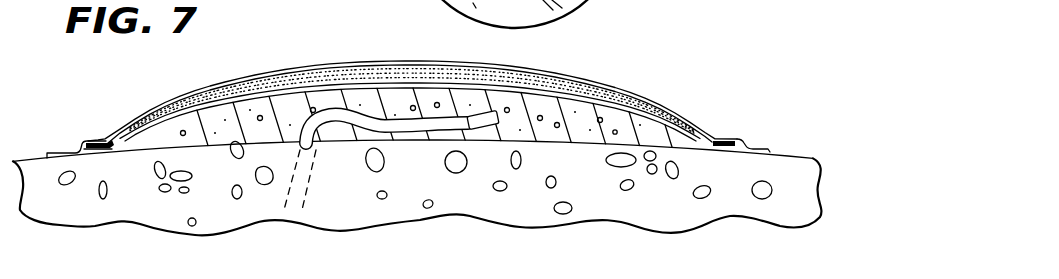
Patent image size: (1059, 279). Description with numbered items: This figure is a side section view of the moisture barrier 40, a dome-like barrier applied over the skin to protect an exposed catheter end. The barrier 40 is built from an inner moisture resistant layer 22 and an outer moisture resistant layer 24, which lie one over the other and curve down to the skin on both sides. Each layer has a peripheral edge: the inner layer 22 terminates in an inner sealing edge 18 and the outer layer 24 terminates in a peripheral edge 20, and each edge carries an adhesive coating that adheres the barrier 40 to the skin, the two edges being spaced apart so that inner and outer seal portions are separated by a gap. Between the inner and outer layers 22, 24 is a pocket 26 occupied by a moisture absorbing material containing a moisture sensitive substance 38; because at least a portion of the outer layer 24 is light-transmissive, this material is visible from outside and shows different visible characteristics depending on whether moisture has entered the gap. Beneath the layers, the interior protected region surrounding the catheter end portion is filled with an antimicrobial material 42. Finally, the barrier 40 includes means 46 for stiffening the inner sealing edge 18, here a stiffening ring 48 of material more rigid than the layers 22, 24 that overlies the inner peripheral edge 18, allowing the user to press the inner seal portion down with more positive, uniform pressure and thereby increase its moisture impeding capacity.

The peripheral edge of inner layer 18 is at (102, 141).
The peripheral edge of outer layer 20 is at (57, 151).
The inner moisture resistant layer 22 is at (588, 96).
The outer moisture resistant layer 24 is at (400, 62).
The pocket 26 is at (306, 84).
The moisture sensitive substance 38 is at (482, 80).
The moisture barrier 40 is at (434, 146).
The antimicrobial material 42 is at (270, 126).
The means for stiffening the inner sealing edge 46 is at (83, 128).
The stiffening ring 48 is at (92, 149).